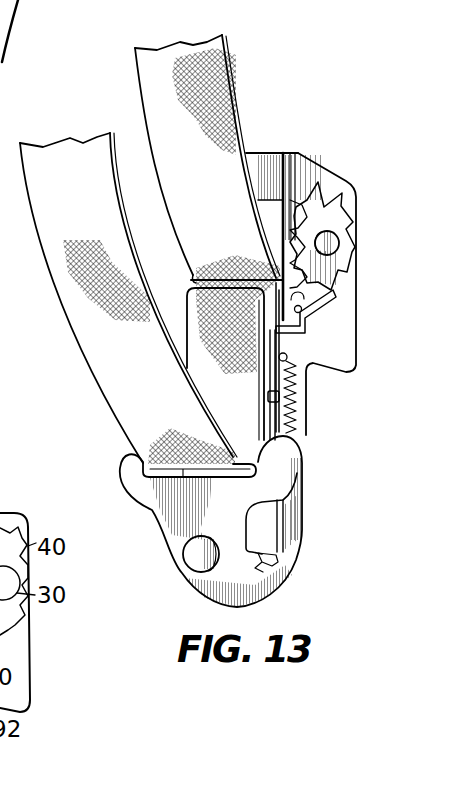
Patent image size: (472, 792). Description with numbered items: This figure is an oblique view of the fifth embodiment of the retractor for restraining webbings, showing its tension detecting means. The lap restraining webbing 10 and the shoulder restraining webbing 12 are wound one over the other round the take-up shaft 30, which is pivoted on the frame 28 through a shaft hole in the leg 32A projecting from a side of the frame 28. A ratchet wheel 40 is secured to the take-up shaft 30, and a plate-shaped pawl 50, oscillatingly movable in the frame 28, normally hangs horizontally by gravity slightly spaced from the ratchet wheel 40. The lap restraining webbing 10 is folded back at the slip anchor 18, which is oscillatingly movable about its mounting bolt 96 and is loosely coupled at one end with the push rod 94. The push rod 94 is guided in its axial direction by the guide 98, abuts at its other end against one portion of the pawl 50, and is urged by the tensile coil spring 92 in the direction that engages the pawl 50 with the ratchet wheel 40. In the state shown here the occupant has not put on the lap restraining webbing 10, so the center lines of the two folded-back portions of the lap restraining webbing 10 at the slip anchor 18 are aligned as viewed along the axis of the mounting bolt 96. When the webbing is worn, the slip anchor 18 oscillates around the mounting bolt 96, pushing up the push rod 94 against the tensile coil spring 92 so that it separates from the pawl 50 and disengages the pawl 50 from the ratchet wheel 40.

The lap restraining webbing 10 is at (92, 382).
The shoulder restraining webbing 12 is at (173, 222).
The slip anchor 18 is at (160, 509).
The frame 28 is at (258, 153).
The take-up shaft 30 is at (335, 247).
The leg 32A is at (356, 324).
The ratchet wheel 40 is at (353, 227).
The pawl 50 is at (320, 312).
The tensile coil spring 92 is at (295, 382).
The push rod 94 is at (276, 415).
The mounting bolt 96 is at (186, 543).
The guide 98 is at (268, 396).